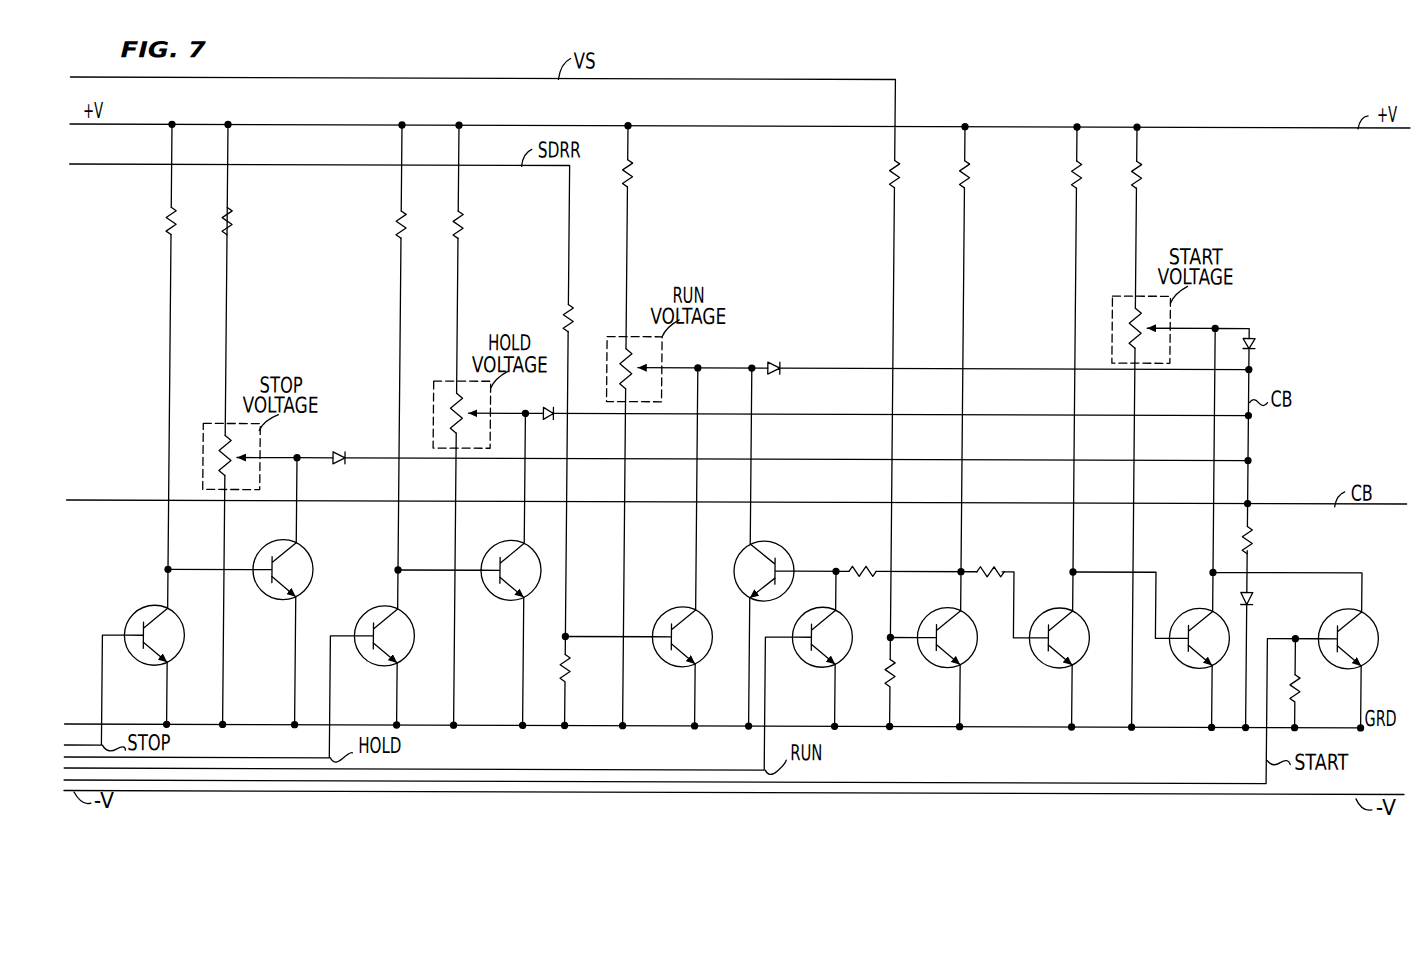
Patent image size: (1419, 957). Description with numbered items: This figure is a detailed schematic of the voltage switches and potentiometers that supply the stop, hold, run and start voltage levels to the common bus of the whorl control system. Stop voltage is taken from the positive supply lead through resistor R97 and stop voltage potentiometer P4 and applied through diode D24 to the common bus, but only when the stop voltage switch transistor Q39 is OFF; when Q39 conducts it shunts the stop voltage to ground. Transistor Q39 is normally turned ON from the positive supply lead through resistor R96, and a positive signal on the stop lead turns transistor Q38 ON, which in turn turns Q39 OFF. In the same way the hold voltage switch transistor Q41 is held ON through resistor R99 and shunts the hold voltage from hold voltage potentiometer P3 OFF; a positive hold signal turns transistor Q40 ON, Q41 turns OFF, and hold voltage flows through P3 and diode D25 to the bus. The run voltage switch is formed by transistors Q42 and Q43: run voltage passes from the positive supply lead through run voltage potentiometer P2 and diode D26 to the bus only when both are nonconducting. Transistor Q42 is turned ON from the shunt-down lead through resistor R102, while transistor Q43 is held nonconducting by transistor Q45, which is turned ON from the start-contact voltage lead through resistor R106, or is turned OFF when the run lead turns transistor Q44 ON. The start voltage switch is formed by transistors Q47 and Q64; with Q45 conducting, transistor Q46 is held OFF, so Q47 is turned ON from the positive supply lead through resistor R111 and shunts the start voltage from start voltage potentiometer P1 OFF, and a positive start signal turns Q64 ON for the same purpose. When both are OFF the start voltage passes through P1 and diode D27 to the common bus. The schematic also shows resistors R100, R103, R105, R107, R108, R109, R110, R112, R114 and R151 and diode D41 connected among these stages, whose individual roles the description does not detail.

The resistor R96 is at (190, 220).
The resistor R97 is at (246, 220).
The resistor R99 is at (420, 224).
The resistor R100 is at (482, 224).
The resistor R102 is at (547, 317).
The resistor R103 is at (651, 173).
The resistor R105 is at (590, 667).
The resistor R106 is at (918, 173).
The resistor R107 is at (868, 558).
The resistor R108 is at (915, 674).
The resistor R109 is at (988, 174).
The resistor R110 is at (998, 559).
The resistor R111 is at (1101, 174).
The resistor R112 is at (1161, 174).
The resistor R114 is at (1272, 540).
The resistor R151 is at (1320, 688).
The start voltage potentiometer P1 is at (1114, 295).
The run voltage potentiometer P2 is at (609, 337).
The hold voltage potentiometer P3 is at (436, 382).
The stop voltage potentiometer P4 is at (206, 425).
The diode D24 is at (338, 444).
The diode D25 is at (546, 401).
The diode D26 is at (772, 356).
The diode D27 is at (1269, 345).
The diode D41 is at (1266, 600).
The transistor Q38 is at (154, 622).
The transistor Q39 is at (283, 591).
The transistor Q40 is at (384, 623).
The transistor Q41 is at (511, 570).
The transistor Q42 is at (682, 627).
The transistor Q43 is at (764, 560).
The transistor Q44 is at (831, 631).
The transistor Q45 is at (947, 629).
The transistor Q46 is at (1059, 629).
The transistor Q47 is at (1199, 629).
The transistor Q64 is at (1348, 630).